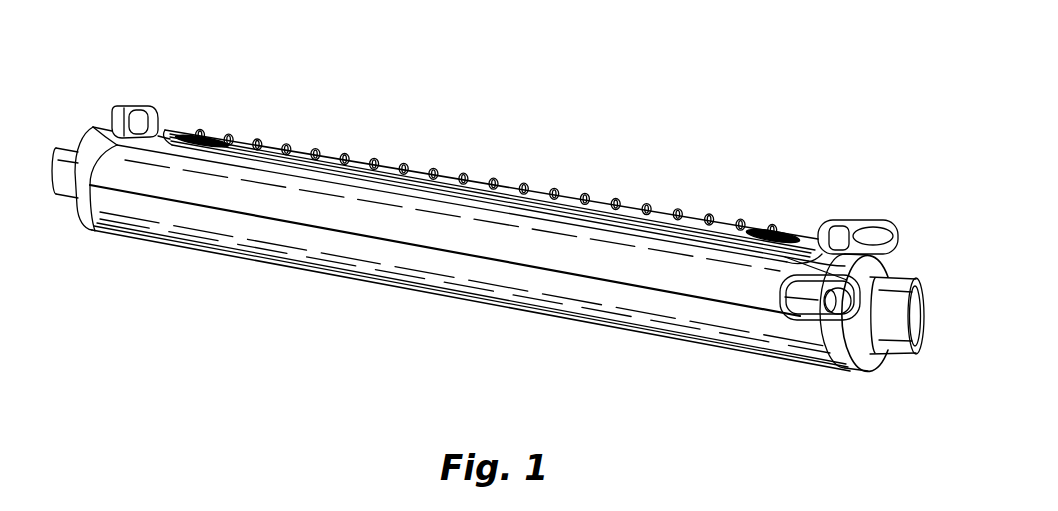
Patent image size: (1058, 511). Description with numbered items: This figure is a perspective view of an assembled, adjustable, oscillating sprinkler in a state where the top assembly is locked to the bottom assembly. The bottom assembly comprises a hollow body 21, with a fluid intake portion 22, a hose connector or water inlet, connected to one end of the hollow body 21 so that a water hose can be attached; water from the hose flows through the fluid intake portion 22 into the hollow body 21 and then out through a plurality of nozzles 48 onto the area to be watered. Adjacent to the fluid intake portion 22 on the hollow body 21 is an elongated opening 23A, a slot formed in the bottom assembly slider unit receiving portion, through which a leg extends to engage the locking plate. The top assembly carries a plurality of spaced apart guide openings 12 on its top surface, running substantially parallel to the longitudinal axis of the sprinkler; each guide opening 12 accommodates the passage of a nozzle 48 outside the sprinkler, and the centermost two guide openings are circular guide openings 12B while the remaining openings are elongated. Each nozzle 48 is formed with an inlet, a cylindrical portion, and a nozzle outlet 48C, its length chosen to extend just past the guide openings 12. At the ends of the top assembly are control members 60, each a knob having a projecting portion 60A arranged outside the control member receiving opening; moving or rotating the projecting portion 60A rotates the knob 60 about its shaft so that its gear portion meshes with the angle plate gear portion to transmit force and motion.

The guide openings 12 is at (620, 207).
The circular guide openings 12B is at (795, 232).
The hollow body 21 is at (92, 210).
The fluid intake portion 22 is at (850, 369).
The elongated opening 23A is at (800, 308).
The nozzle 48 is at (491, 174).
The nozzle outlet 48C is at (316, 150).
The control member 60 is at (860, 208).
The projecting portion 60A is at (134, 108).